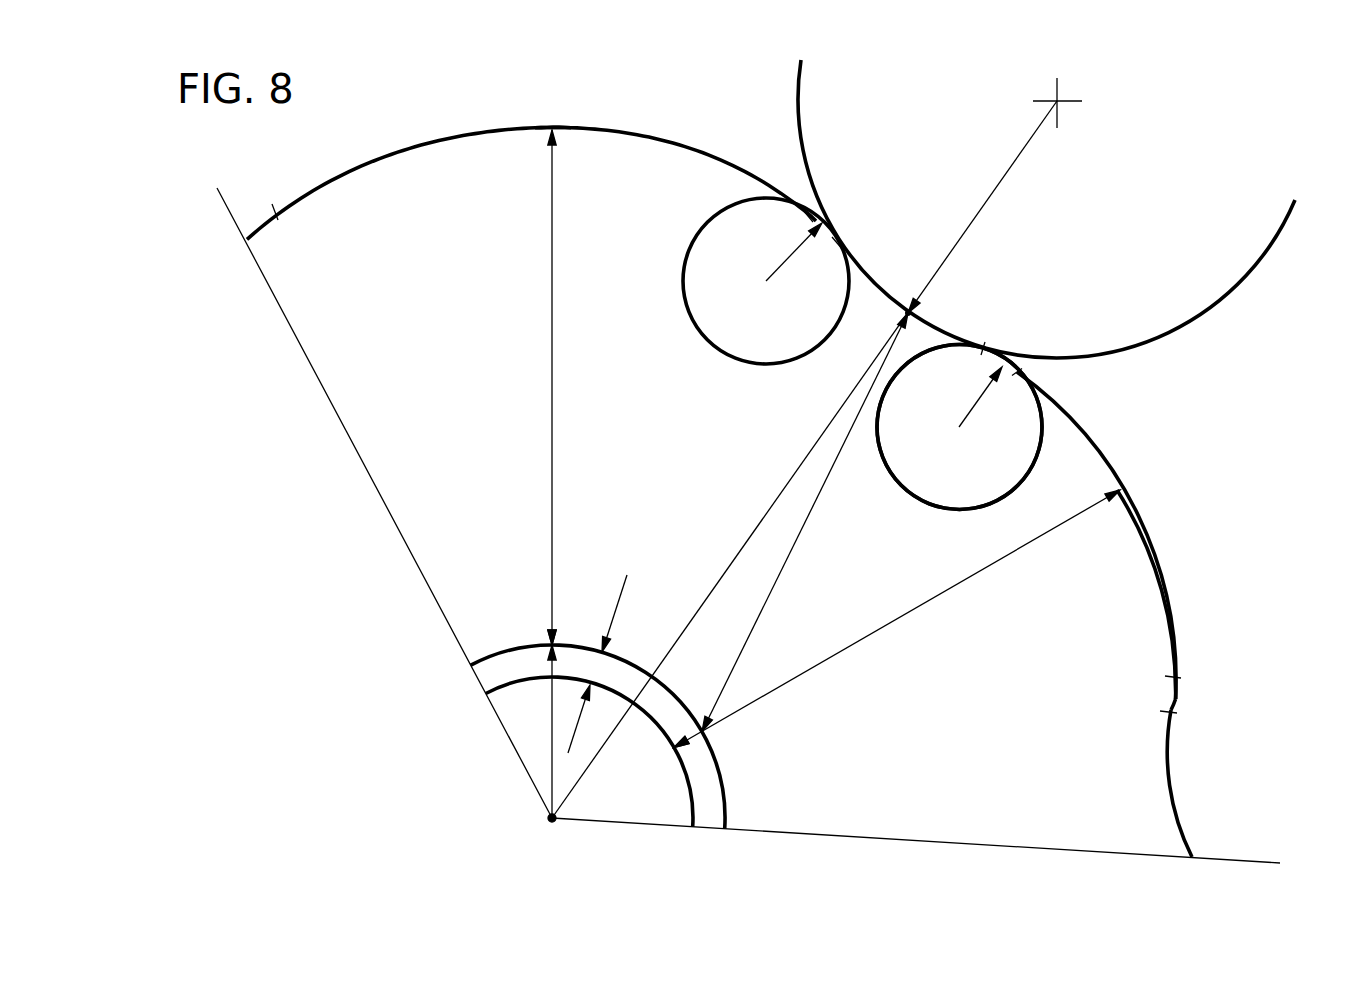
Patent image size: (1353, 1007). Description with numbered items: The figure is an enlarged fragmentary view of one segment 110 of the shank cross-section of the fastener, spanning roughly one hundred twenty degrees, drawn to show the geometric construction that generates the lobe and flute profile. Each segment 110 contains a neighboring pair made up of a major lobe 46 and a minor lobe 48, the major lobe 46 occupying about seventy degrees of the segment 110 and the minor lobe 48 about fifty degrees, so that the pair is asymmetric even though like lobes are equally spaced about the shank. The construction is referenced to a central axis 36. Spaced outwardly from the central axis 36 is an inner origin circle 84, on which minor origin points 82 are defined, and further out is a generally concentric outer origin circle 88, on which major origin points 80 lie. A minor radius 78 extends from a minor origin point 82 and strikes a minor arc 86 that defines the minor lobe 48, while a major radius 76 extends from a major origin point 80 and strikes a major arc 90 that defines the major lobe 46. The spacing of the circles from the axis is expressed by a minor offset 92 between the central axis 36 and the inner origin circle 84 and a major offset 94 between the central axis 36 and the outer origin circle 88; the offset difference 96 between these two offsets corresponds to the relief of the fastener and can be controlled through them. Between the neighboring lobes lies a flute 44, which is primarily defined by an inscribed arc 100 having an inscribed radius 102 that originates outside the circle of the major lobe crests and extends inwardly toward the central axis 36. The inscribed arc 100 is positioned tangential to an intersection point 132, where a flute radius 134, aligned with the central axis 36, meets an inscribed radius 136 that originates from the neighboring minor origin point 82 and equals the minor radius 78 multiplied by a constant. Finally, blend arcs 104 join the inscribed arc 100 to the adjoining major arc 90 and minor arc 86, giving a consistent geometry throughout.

The central axis 36 is at (547, 823).
The flute 44 is at (1180, 775).
The major lobe 46 is at (455, 128).
The minor lobe 48 is at (1165, 552).
The major radius 76 is at (548, 392).
The minor radius 78 is at (872, 635).
The major origin point 80 is at (548, 642).
The minor origin point 82 is at (675, 747).
The inner origin circle 84 is at (488, 685).
The minor arc 86 is at (1172, 615).
The outer origin circle 88 is at (478, 652).
The major arc 90 is at (582, 127).
The minor offset 92 is at (617, 787).
The major offset 94 is at (552, 740).
The offset difference 96 is at (593, 667).
The inscribed arc 100 is at (940, 333).
The inscribed radius 102 is at (1023, 153).
The blend arc 104 is at (812, 213).
The segment 110 is at (1190, 424).
The intersection point 132 is at (907, 310).
The flute radius 134 is at (754, 525).
The inscribed radius 136 is at (802, 514).